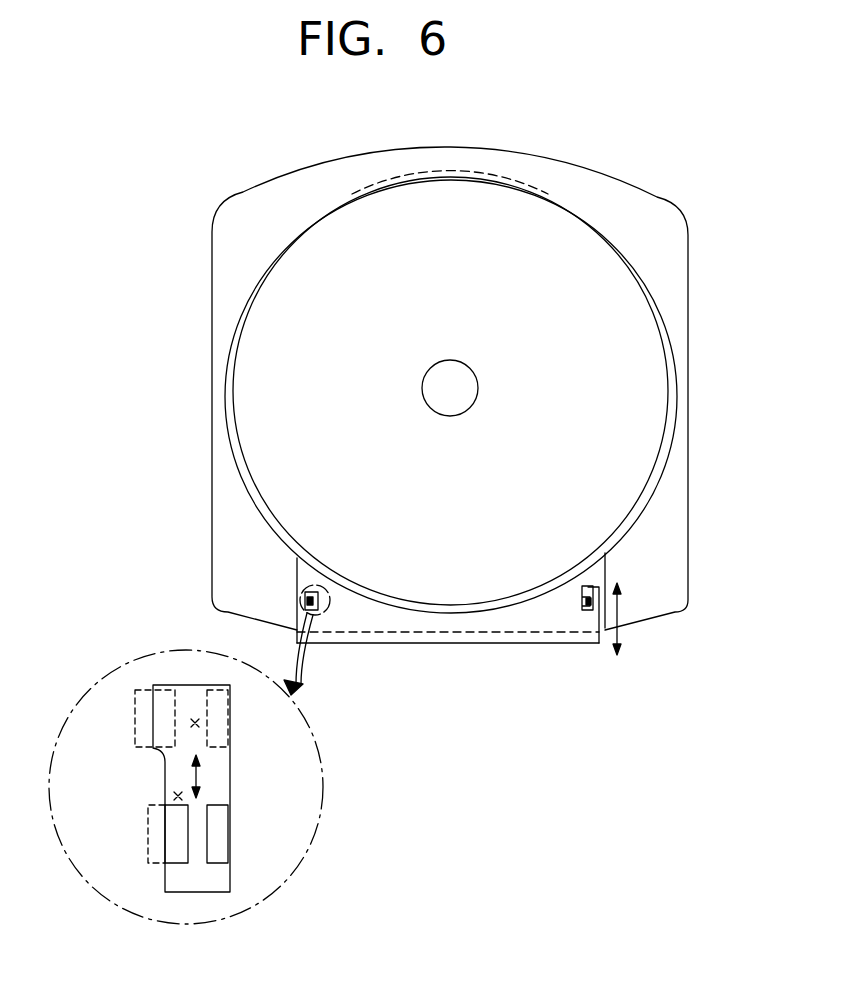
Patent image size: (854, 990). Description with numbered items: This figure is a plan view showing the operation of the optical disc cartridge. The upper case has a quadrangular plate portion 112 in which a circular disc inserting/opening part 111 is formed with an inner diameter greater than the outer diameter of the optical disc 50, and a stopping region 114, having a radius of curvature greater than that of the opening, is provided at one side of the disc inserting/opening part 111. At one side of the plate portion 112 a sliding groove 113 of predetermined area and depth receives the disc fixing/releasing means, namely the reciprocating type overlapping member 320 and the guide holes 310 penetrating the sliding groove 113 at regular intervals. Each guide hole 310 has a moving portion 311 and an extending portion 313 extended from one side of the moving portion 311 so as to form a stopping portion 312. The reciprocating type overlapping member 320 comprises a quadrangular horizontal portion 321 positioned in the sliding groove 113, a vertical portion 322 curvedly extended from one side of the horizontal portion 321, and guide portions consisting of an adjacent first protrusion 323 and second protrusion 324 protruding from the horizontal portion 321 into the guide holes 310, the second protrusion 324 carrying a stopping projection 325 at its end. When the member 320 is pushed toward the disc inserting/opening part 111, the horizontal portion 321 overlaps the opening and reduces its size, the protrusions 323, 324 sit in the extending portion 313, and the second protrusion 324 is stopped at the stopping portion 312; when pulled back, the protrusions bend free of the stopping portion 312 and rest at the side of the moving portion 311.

The optical disc 50 is at (727, 364).
The disc inserting/opening part 111 is at (242, 460).
The plate portion 112 is at (723, 200).
The sliding groove 113 is at (722, 572).
The stopping region 114 is at (573, 134).
The guide holes 310 is at (37, 641).
The moving portion 311 is at (178, 796).
The stopping portion 312 is at (163, 755).
The extending portion 313 is at (195, 723).
The reciprocating type overlapping member 320 is at (475, 712).
The horizontal portion 321 is at (542, 720).
The vertical portion 322 is at (395, 720).
The first protrusion 323 is at (222, 950).
The second protrusion 324 is at (175, 950).
The stopping projection 325 is at (118, 925).